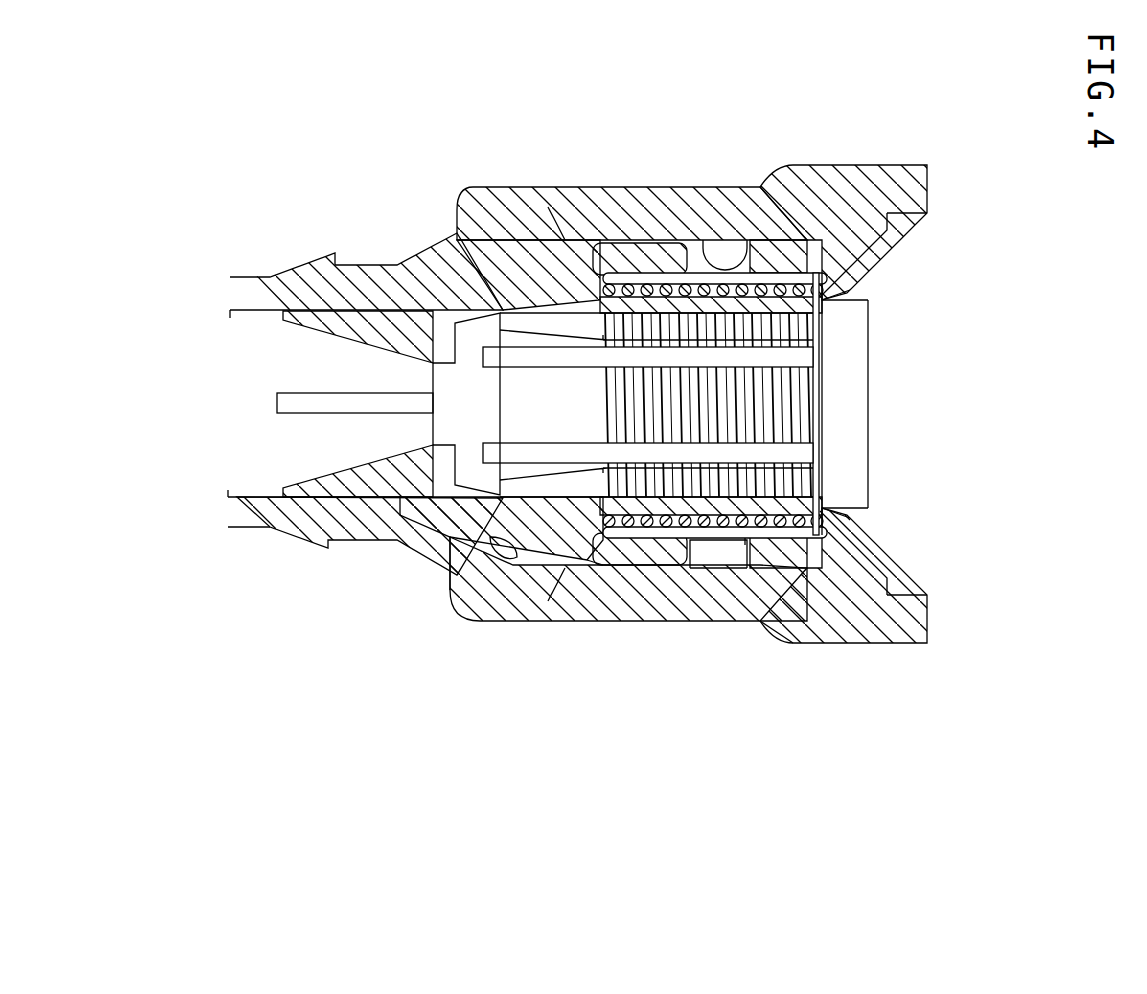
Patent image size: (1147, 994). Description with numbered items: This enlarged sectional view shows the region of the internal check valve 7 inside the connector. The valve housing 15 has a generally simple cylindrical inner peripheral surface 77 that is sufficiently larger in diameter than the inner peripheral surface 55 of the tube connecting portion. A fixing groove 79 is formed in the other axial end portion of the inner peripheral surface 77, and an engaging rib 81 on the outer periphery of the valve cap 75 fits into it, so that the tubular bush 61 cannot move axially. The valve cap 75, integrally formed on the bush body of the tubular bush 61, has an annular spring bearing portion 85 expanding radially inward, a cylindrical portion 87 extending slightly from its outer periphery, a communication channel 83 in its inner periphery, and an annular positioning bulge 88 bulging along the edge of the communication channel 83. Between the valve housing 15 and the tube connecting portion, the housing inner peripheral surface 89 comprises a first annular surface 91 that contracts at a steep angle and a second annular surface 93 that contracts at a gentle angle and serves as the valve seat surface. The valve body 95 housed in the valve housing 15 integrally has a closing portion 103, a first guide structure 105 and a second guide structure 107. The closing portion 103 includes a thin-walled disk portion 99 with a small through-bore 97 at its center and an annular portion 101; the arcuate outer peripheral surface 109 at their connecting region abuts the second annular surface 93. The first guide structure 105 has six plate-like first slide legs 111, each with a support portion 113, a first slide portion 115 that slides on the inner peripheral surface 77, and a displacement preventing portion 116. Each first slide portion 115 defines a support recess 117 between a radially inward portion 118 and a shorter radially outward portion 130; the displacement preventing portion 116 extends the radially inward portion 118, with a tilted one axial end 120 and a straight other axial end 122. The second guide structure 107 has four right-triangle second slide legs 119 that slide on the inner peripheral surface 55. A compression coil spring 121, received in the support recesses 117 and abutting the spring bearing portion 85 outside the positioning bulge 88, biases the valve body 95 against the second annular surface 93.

The internal check valve 7 is at (727, 560).
The valve housing 15 is at (687, 203).
The inner peripheral surface 55 is at (253, 311).
The tubular bush 61 is at (905, 615).
The valve cap 75 is at (892, 390).
The inner peripheral surface 77 is at (757, 275).
The fixing groove 79 is at (867, 197).
The engaging rib 81 is at (813, 527).
The communication channel 83 is at (847, 304).
The spring bearing portion 85 is at (830, 514).
The cylindrical portion 87 is at (740, 540).
The annular positioning bulge 88 is at (823, 310).
The housing inner peripheral surface 89 is at (450, 293).
The first annular surface 91 is at (517, 563).
The second annular surface 93 is at (420, 499).
The valve body 95 is at (345, 447).
The small through-bore 97 is at (447, 403).
The disk portion 99 is at (407, 366).
The annular portion 101 is at (490, 389).
The closing portion 103 is at (468, 545).
The first guide structure 105 is at (608, 583).
The second guide structure 107 is at (363, 292).
The outer peripheral surface 109 is at (447, 273).
The first slide leg 111 is at (548, 207).
The support portion 113 is at (500, 250).
The first slide portion 115 is at (655, 257).
The displacement preventing portion 116 is at (812, 300).
The support recess 117 is at (627, 300).
The radially inward portion 118 is at (600, 245).
The second slide leg 119 is at (297, 307).
The one axial end 120 is at (702, 300).
The compression coil spring 121 is at (807, 420).
The other axial end 122 is at (853, 243).
The radially outward portion 130 is at (673, 257).